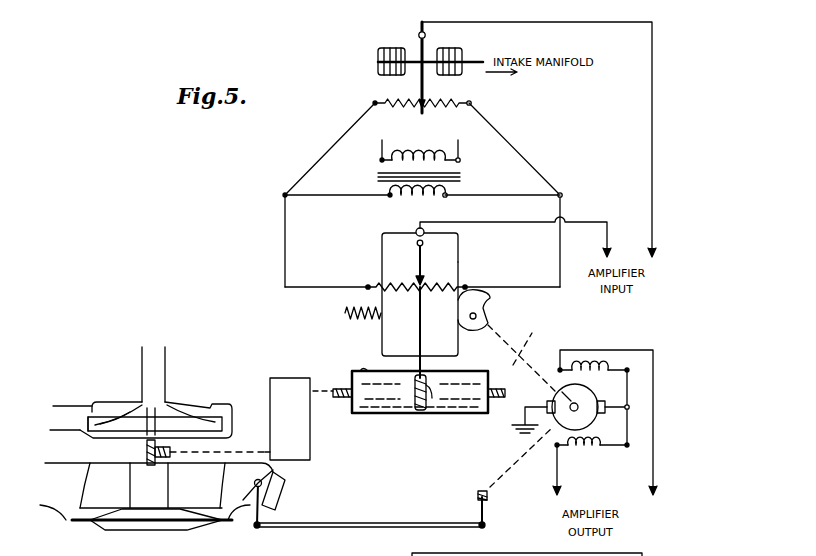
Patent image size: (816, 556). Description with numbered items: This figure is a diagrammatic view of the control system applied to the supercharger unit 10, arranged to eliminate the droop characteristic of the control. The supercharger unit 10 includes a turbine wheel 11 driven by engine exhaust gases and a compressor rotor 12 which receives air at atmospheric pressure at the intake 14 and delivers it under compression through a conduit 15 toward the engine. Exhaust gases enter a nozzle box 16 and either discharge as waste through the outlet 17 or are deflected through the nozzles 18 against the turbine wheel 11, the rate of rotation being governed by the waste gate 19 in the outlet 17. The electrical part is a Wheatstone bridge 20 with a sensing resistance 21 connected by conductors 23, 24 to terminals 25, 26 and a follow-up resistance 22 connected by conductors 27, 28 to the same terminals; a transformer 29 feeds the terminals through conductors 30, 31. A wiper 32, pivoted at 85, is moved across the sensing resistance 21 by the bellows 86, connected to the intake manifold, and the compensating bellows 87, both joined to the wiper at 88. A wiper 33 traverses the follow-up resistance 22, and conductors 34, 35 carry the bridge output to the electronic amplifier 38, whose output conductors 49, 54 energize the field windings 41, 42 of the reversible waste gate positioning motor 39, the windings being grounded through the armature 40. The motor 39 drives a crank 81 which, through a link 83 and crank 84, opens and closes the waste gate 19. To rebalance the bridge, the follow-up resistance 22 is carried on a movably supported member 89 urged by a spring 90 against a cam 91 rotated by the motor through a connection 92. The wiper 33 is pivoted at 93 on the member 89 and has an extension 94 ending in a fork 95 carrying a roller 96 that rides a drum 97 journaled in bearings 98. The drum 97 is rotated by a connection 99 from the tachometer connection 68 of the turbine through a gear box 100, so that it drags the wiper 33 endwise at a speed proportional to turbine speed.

The supercharger unit 10 is at (193, 399).
The turbine wheel 11 is at (90, 522).
The compressor rotor 12 is at (128, 420).
The intake 14 is at (152, 355).
The conduit 15 is at (60, 418).
The nozzle box 16 is at (115, 492).
The outlet 17 is at (284, 500).
The nozzles 18 is at (62, 521).
The waste gate 19 is at (280, 477).
The Wheatstone bridge 20 is at (460, 127).
The sensing resistance 21 is at (403, 105).
The follow-up resistance 22 is at (397, 282).
The conductor 23 is at (334, 145).
The conductor 24 is at (492, 126).
The terminal 25 is at (283, 193).
The terminal 26 is at (563, 193).
The conductor 27 is at (286, 245).
The conductor 28 is at (560, 250).
The transformer 29 is at (471, 178).
The conductor 30 is at (324, 196).
The conductor 31 is at (501, 196).
The wiper 32 is at (426, 88).
The wiper 33 is at (423, 270).
The conductor 34 is at (652, 135).
The conductor 35 is at (608, 233).
The electronic amplifier 38 is at (510, 470).
The waste gate positioning motor 39 is at (548, 448).
The armature 40 is at (592, 419).
The field winding 41 is at (588, 368).
The field winding 42 is at (596, 448).
The conductor 49 is at (654, 467).
The conductor 54 is at (558, 477).
The tachometer connection 68 is at (146, 452).
The crank 81 is at (487, 506).
The link 83 is at (390, 522).
The crank 84 is at (255, 527).
The pivot 85 is at (426, 35).
The bellows 86 is at (461, 52).
The compensating bellows 87 is at (390, 75).
The connection 88 is at (420, 60).
The movably supported member 89 is at (459, 262).
The spring 90 is at (350, 329).
The cam 91 is at (480, 294).
The connection 92 is at (522, 357).
The pivot 93 is at (416, 243).
The extension 94 is at (422, 320).
The fork 95 is at (433, 398).
The roller 96 is at (416, 407).
The drum 97 is at (375, 403).
The bearings 98 is at (340, 398).
The connection 99 is at (250, 452).
The gear box 100 is at (287, 378).